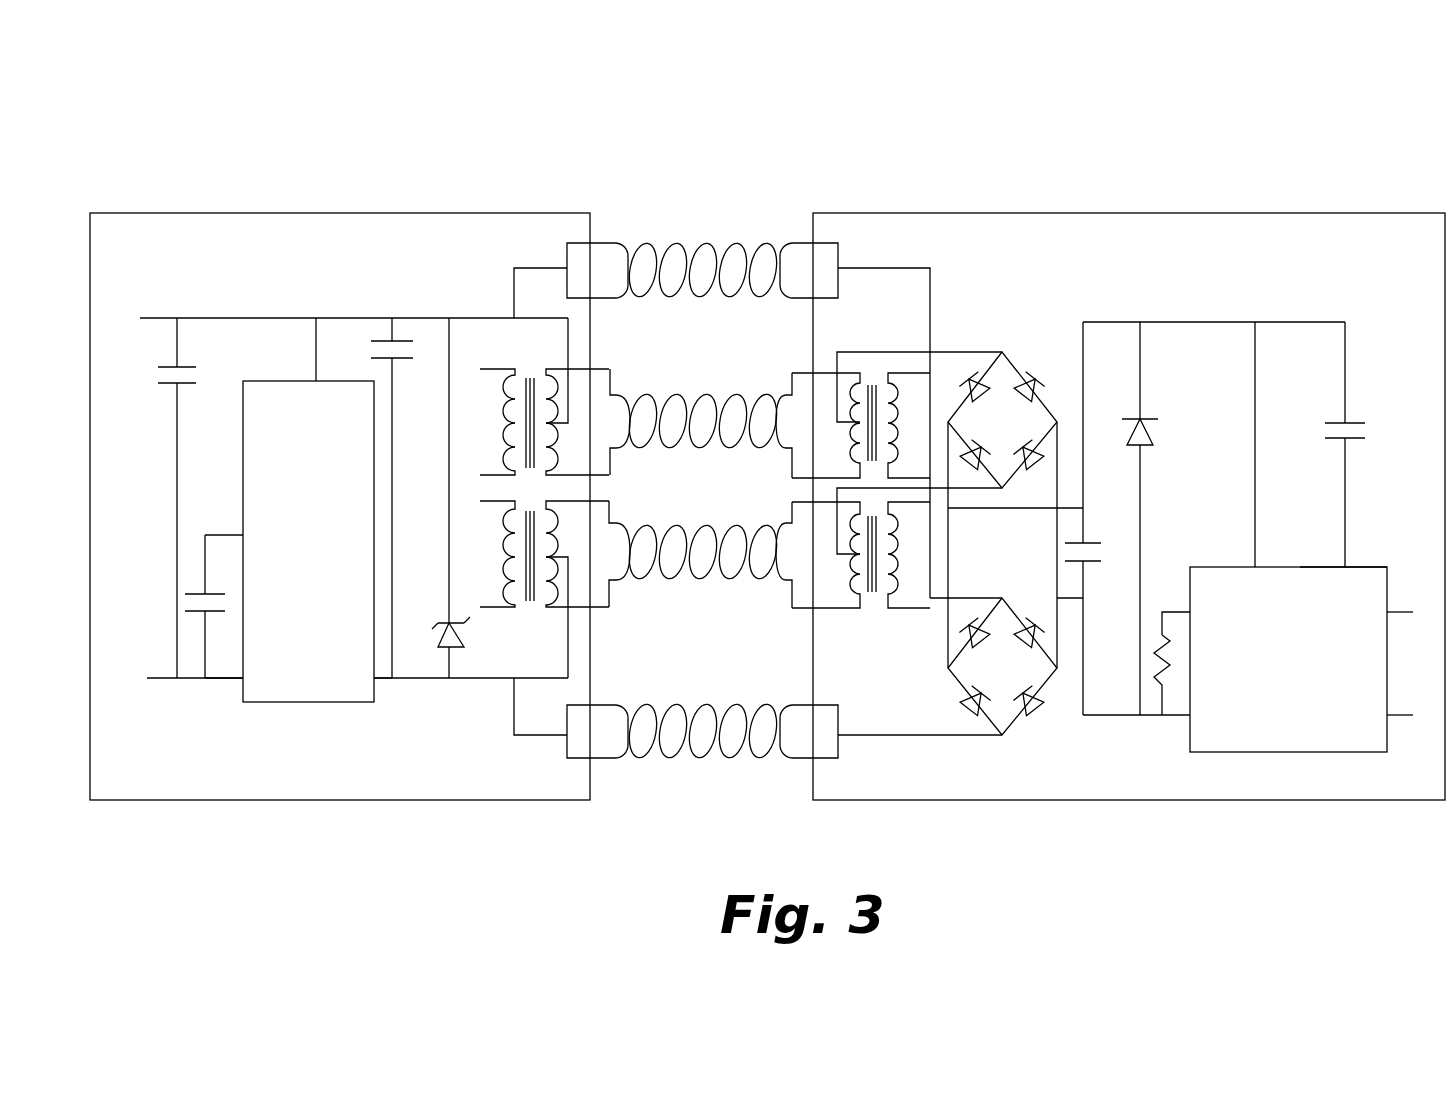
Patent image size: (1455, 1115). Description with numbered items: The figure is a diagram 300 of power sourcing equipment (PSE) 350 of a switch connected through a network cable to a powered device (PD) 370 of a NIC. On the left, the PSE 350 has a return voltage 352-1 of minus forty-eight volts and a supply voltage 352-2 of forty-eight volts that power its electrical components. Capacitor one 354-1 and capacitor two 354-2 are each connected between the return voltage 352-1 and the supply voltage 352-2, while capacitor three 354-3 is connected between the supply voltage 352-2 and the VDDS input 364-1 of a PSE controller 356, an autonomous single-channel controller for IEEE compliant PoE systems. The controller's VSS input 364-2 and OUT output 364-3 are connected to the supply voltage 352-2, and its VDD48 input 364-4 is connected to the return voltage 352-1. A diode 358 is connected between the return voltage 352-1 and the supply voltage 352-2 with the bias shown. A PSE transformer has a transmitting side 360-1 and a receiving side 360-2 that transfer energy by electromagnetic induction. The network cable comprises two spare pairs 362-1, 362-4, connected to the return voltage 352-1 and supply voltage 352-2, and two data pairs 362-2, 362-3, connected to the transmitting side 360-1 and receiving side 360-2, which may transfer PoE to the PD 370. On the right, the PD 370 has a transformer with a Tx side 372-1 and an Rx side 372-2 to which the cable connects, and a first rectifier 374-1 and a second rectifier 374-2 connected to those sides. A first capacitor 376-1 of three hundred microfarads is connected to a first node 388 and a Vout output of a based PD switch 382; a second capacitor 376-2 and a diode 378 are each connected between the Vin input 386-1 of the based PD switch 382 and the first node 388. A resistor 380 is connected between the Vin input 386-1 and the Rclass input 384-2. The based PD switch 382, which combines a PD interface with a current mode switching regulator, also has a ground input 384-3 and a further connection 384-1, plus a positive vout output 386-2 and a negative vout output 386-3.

The diagram 300 is at (210, 108).
The power sourcing equipment (PSE) 350 is at (405, 185).
The return voltage 352-1 is at (213, 307).
The supply voltage 352-2 is at (160, 682).
The capacitor one 354-1 is at (185, 360).
The capacitor two 354-2 is at (400, 325).
The capacitor three 354-3 is at (195, 585).
The PSE controller 356 is at (308, 541).
The diode 358 is at (430, 620).
The transmitting (Tx) side of the PSE transformer 360-1 is at (493, 440).
The receiving (Rx) side of the PSE transformer 360-2 is at (493, 578).
The spare pair 362-1 is at (690, 237).
The data pair 362-2 is at (690, 392).
The data pair 362-3 is at (692, 524).
The spare pair 362-4 is at (692, 698).
The VDDS input 364-1 is at (235, 530).
The VSS input 364-2 is at (238, 684).
The OUT output 364-3 is at (380, 684).
The VDD48 input 364-4 is at (305, 375).
The powered device (PD) 370 is at (1068, 185).
The Tx side of the PD transformer 372-1 is at (875, 617).
The Rx side of the PD transformer 372-2 is at (878, 372).
The first rectifier 374-1 is at (1016, 350).
The second rectifier 374-2 is at (1021, 590).
The first capacitor 376-1 is at (1372, 418).
The second capacitor 376-2 is at (1105, 535).
The diode 378 is at (1163, 420).
The resistor 380 is at (1152, 655).
The based PD switch 382 is at (1288, 659).
The based PD switch connection 384-1 is at (1175, 720).
The Rclass input 384-2 is at (1190, 607).
The ground input 384-3 is at (1245, 562).
The Vin input 386-1 is at (1325, 562).
The positive vout output 386-2 is at (1397, 598).
The negative vout output 386-3 is at (1398, 722).
The first node 388 is at (1230, 318).